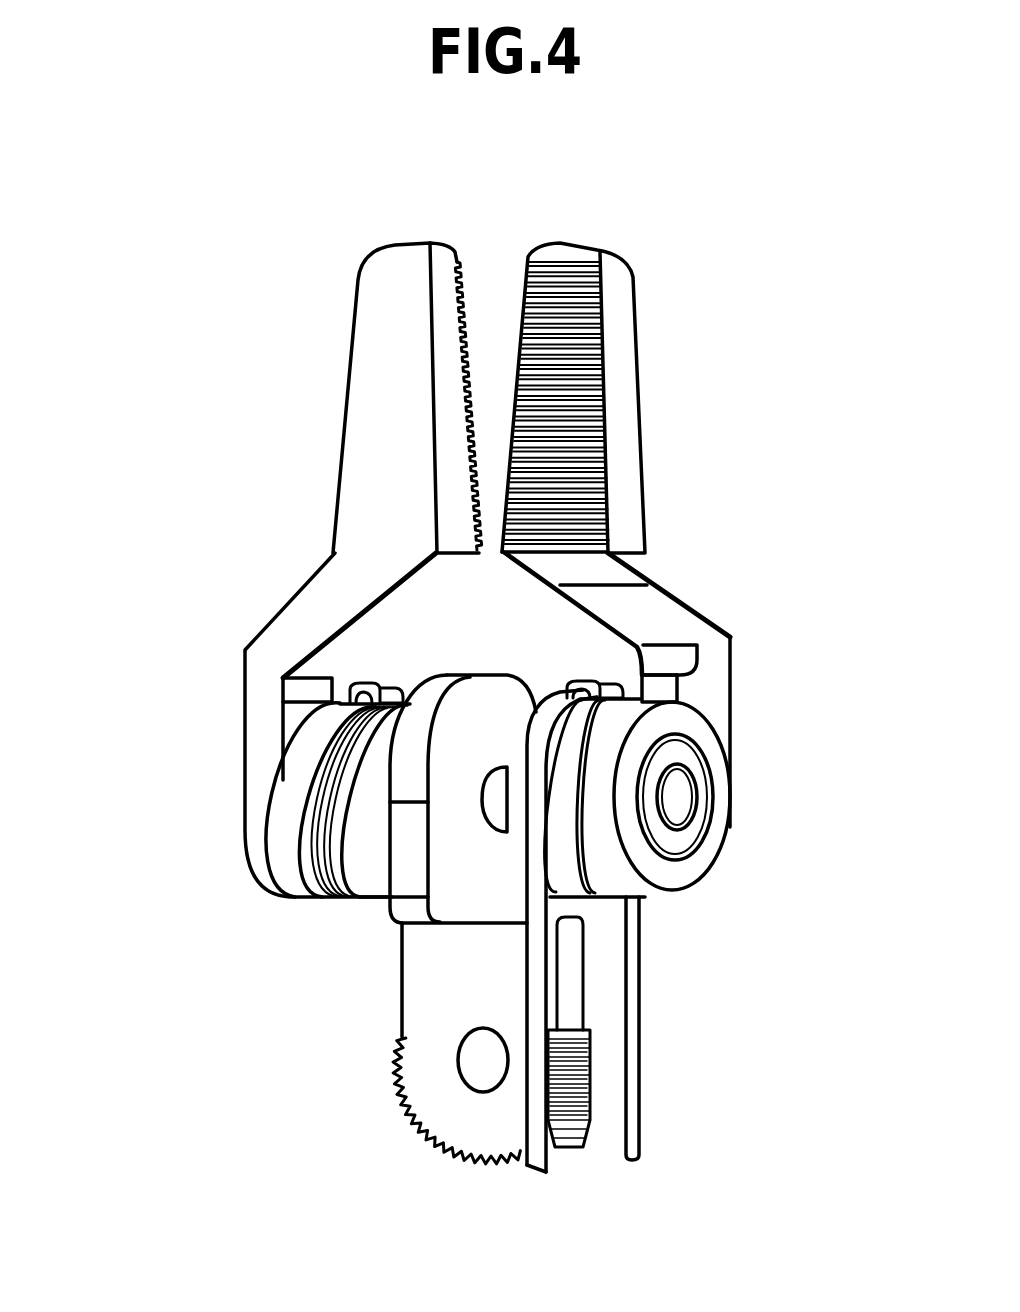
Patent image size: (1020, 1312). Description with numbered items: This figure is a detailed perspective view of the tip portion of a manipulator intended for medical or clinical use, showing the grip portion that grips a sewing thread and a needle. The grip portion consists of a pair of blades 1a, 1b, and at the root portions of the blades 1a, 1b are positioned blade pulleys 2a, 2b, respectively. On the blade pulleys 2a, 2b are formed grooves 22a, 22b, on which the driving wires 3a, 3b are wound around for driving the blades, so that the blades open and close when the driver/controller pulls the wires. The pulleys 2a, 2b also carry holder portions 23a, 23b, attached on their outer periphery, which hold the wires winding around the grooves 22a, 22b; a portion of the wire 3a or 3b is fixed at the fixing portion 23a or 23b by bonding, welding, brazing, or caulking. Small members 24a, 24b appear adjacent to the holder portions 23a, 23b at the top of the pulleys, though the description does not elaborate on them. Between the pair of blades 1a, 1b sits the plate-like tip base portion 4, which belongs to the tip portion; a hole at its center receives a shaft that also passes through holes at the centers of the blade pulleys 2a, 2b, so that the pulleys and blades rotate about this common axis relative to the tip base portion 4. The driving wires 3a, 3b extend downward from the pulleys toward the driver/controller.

The blade 1a is at (625, 432).
The blade 1b is at (378, 448).
The blade pulley 2a is at (577, 740).
The blade pulley 2b is at (297, 827).
The groove 22a is at (557, 852).
The groove 22b is at (310, 768).
The holder portion 23a is at (618, 677).
The holder portion 23b is at (387, 688).
The stopper (right) 24a is at (580, 680).
The stopper (left) 24b is at (357, 703).
The driving wire 3a is at (632, 990).
The driving wire 3b is at (533, 942).
The tip base portion 4 is at (413, 865).